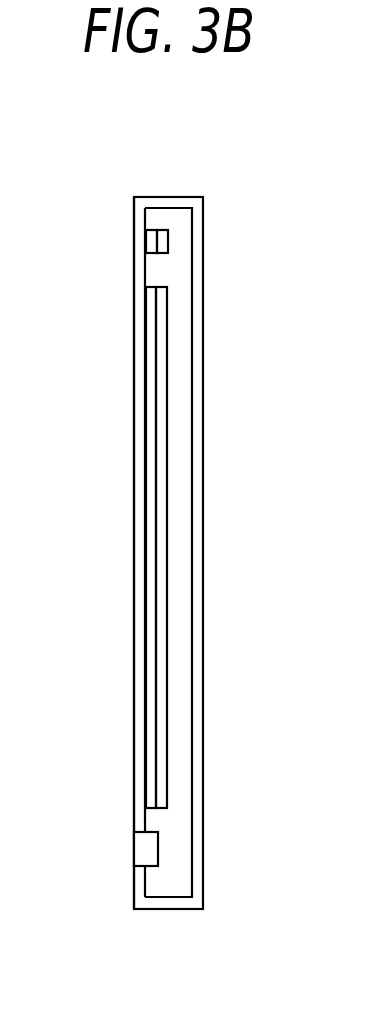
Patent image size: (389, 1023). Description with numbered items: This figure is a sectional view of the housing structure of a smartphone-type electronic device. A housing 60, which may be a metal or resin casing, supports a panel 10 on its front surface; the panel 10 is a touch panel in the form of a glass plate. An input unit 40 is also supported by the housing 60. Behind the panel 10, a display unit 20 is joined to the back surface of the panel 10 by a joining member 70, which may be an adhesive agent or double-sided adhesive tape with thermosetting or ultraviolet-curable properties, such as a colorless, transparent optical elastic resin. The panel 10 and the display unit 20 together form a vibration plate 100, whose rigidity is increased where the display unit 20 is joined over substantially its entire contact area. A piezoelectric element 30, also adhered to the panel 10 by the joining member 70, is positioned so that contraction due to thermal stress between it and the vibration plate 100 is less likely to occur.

The vibration plate 100 is at (72, 370).
The panel 10 is at (138, 393).
The display unit 20 is at (162, 470).
The piezoelectric element 30 is at (160, 230).
The input unit 40 is at (142, 851).
The housing 60 is at (204, 246).
The joining member 70 is at (151, 230).